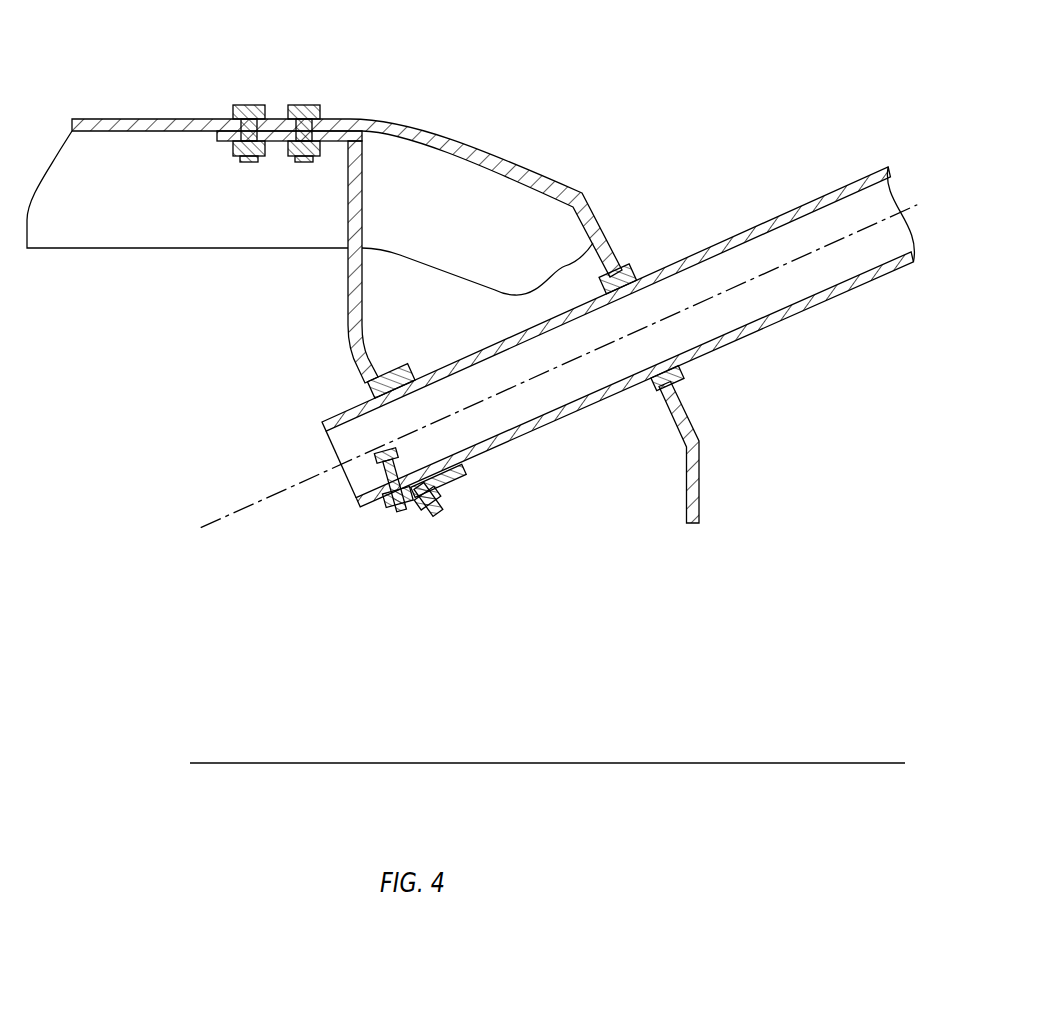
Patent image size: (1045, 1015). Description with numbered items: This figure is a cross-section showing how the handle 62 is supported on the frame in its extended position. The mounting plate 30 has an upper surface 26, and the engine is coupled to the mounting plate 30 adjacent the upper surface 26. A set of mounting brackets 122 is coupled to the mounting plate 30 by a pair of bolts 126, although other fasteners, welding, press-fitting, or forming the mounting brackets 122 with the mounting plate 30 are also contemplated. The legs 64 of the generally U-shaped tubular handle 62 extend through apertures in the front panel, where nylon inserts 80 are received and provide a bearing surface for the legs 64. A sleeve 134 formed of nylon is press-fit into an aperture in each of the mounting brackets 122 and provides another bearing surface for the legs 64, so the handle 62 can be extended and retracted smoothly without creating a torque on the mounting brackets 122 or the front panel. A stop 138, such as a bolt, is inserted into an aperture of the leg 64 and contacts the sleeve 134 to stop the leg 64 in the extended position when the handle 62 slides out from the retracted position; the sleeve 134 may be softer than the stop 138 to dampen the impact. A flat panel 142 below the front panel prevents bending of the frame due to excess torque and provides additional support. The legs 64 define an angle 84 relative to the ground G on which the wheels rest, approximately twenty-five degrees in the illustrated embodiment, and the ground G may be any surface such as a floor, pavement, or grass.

The upper surface 26 is at (117, 119).
The mounting plate 30 is at (147, 132).
The bolts 126 is at (248, 104).
The mounting brackets 122 is at (348, 285).
The nylon inserts 80 is at (633, 273).
The legs 64 is at (860, 279).
The handle 62 is at (787, 275).
The stop 138 is at (391, 512).
The sleeve 134 is at (446, 498).
The flat panel 142 is at (694, 469).
The angle 84 is at (230, 514).
The ground G is at (604, 763).